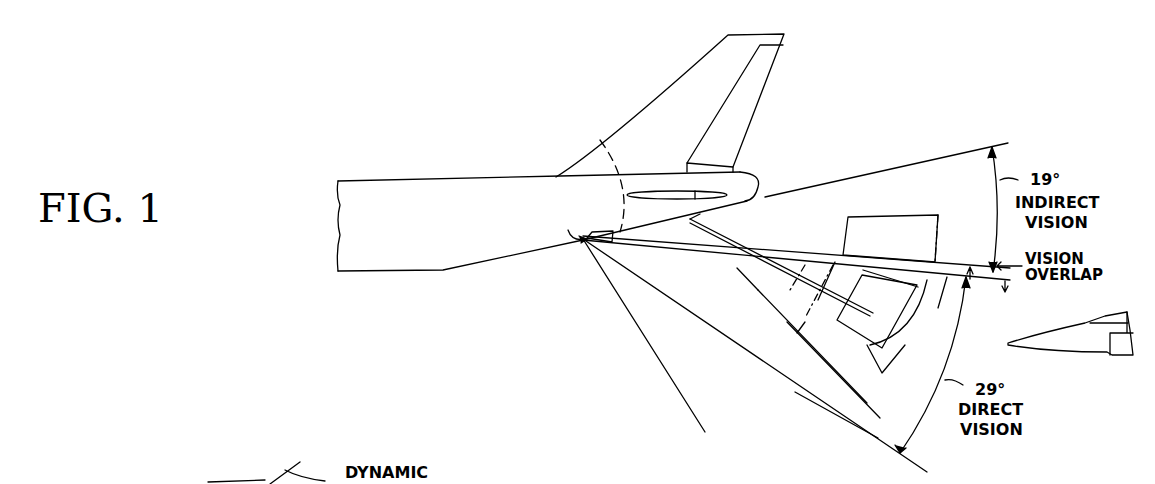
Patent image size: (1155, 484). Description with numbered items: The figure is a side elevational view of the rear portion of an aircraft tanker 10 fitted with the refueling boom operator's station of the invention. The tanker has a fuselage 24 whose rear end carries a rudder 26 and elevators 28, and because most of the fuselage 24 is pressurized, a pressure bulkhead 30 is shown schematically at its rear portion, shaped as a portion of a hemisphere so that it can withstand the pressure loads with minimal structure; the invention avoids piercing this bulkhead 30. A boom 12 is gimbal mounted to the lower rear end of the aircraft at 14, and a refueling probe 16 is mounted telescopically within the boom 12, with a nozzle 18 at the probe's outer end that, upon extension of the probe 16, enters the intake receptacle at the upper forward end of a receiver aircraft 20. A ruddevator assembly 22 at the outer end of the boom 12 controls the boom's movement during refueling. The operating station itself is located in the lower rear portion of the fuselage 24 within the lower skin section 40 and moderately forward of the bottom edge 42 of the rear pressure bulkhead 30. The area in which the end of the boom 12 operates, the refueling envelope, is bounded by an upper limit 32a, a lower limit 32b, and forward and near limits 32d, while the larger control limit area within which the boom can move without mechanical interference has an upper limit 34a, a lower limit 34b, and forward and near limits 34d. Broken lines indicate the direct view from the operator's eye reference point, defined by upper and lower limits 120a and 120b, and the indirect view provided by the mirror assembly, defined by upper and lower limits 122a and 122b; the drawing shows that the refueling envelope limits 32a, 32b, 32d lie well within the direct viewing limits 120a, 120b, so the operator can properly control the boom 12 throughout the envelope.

The aircraft tanker 10 is at (490, 150).
The boom 12 is at (723, 242).
The gimbal mounting location 14 is at (700, 214).
The refueling probe 16 is at (799, 322).
The nozzle 18 is at (817, 348).
The receiver aircraft 20 is at (1080, 352).
The ruddevator assembly 22 is at (812, 270).
The fuselage 24 is at (403, 193).
The rudder 26 is at (757, 65).
The elevators 28 is at (727, 177).
The pressure bulkhead 30 is at (606, 133).
The upper limit of refueling envelope 32a is at (898, 280).
The lower limit of refueling envelope 32b is at (867, 345).
The forward and near limits of refueling envelope 32d is at (858, 275).
The upper limit of control limit area 34a is at (908, 216).
The lower limit of control limit area 34b is at (797, 392).
The forward and near limits of control limit area 34d is at (843, 252).
The lower skin section 40 is at (538, 255).
The bottom edge of rear pressure bulkhead 42 is at (612, 235).
The upper limit of direct view 120a is at (947, 277).
The lower limit of direct view 120b is at (878, 440).
The upper limit of indirect view 122a is at (912, 160).
The lower limit of indirect view 122b is at (977, 283).